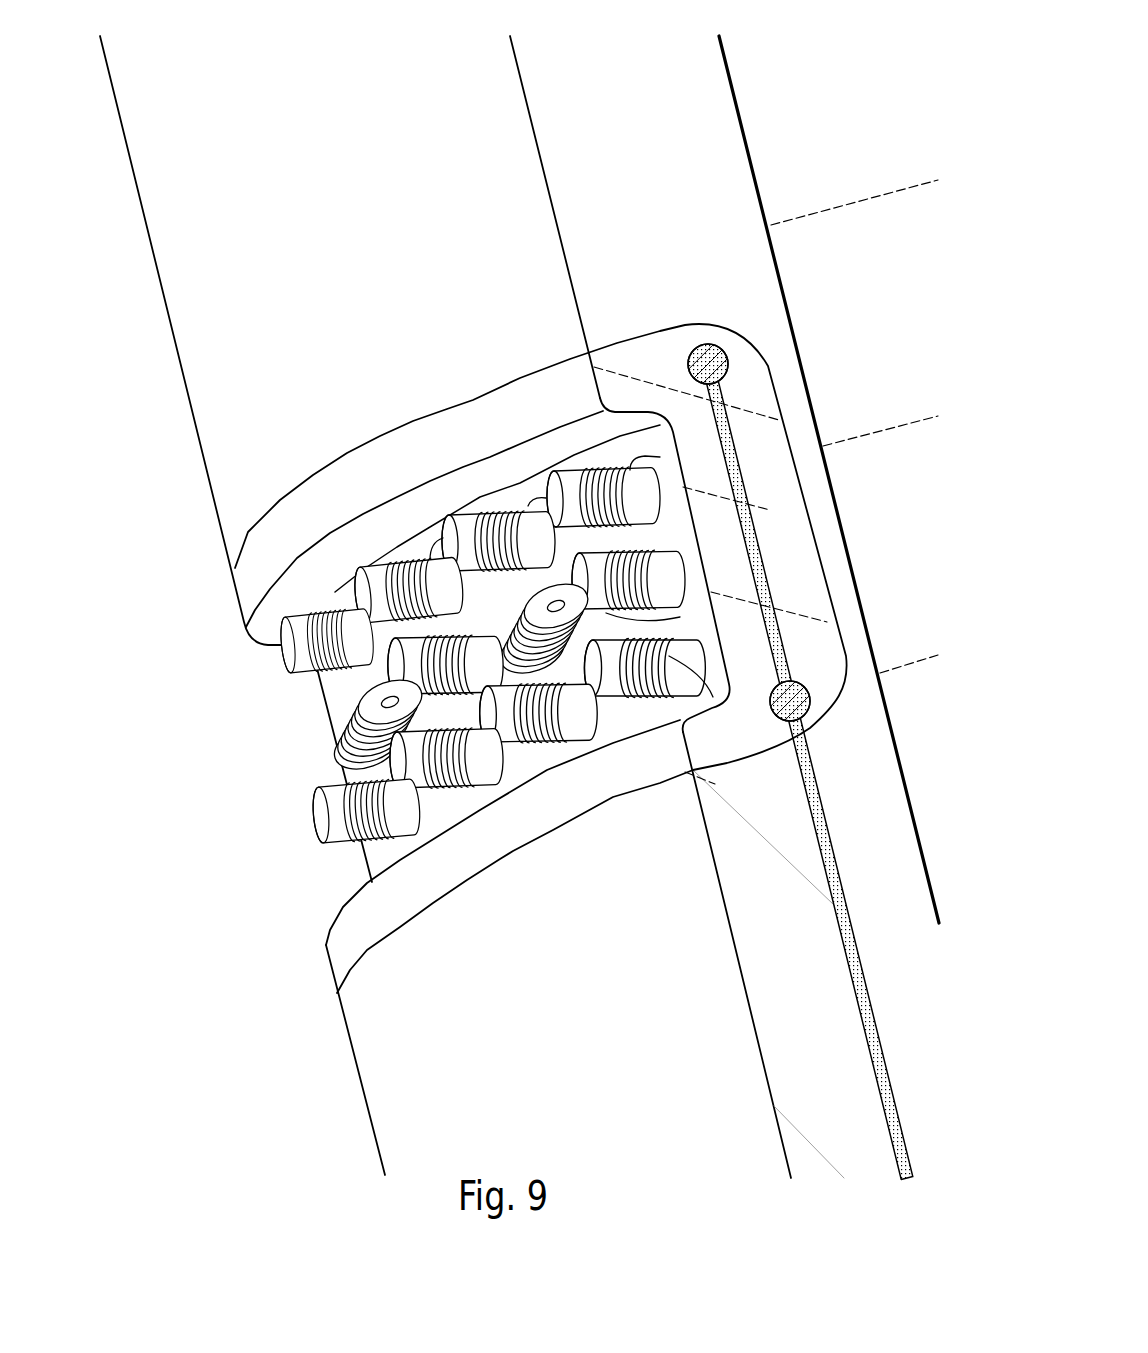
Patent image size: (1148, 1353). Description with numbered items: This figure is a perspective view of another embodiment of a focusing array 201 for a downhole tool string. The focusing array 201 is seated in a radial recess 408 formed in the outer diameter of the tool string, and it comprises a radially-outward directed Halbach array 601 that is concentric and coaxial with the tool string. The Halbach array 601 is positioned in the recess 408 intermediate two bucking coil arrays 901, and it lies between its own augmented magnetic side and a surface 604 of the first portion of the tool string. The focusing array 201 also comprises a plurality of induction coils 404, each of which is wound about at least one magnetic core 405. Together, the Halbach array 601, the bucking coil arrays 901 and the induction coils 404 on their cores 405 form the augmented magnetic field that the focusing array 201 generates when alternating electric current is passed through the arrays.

The focusing array 201 is at (126, 626).
The induction coil 404 is at (556, 775).
The magnetic core 405 is at (582, 715).
The radial recess 408 is at (384, 852).
The radially-outward directed Halbach array 601 is at (401, 732).
The surface 604 is at (677, 536).
The bucking coil array 901 is at (262, 660).